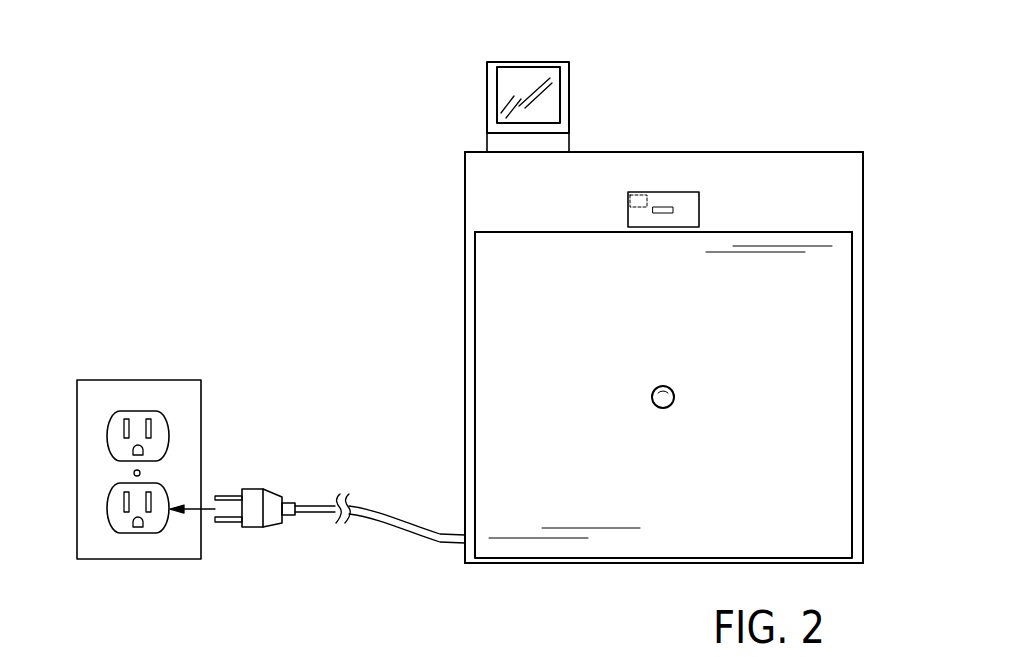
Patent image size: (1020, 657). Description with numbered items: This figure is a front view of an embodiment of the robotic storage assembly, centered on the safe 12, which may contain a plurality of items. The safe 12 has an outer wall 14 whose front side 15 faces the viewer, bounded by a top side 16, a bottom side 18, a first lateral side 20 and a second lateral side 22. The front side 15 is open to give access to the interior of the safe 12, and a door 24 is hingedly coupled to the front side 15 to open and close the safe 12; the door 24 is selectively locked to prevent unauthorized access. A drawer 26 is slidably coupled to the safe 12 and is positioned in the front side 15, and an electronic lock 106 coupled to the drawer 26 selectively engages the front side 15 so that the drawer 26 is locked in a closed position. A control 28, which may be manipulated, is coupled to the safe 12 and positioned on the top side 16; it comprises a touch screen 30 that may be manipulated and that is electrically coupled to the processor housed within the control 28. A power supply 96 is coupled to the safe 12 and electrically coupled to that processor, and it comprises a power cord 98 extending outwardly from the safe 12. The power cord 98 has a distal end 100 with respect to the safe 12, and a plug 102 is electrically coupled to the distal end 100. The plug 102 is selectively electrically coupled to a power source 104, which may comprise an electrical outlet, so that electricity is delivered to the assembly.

The safe 12 is at (863, 152).
The outer wall 14 is at (492, 198).
The front side 15 is at (823, 195).
The top side 16 is at (713, 152).
The bottom side 18 is at (607, 563).
The first lateral side 20 is at (465, 305).
The second lateral side 22 is at (863, 450).
The door 24 is at (475, 428).
The drawer 26 is at (648, 192).
The control 28 is at (510, 60).
The touch screen 30 is at (497, 95).
The power supply 96 is at (392, 509).
The power cord 98 is at (380, 534).
The distal end 100 is at (297, 505).
The plug 102 is at (259, 495).
The power source 104 is at (201, 381).
The electronic lock 106 is at (652, 192).